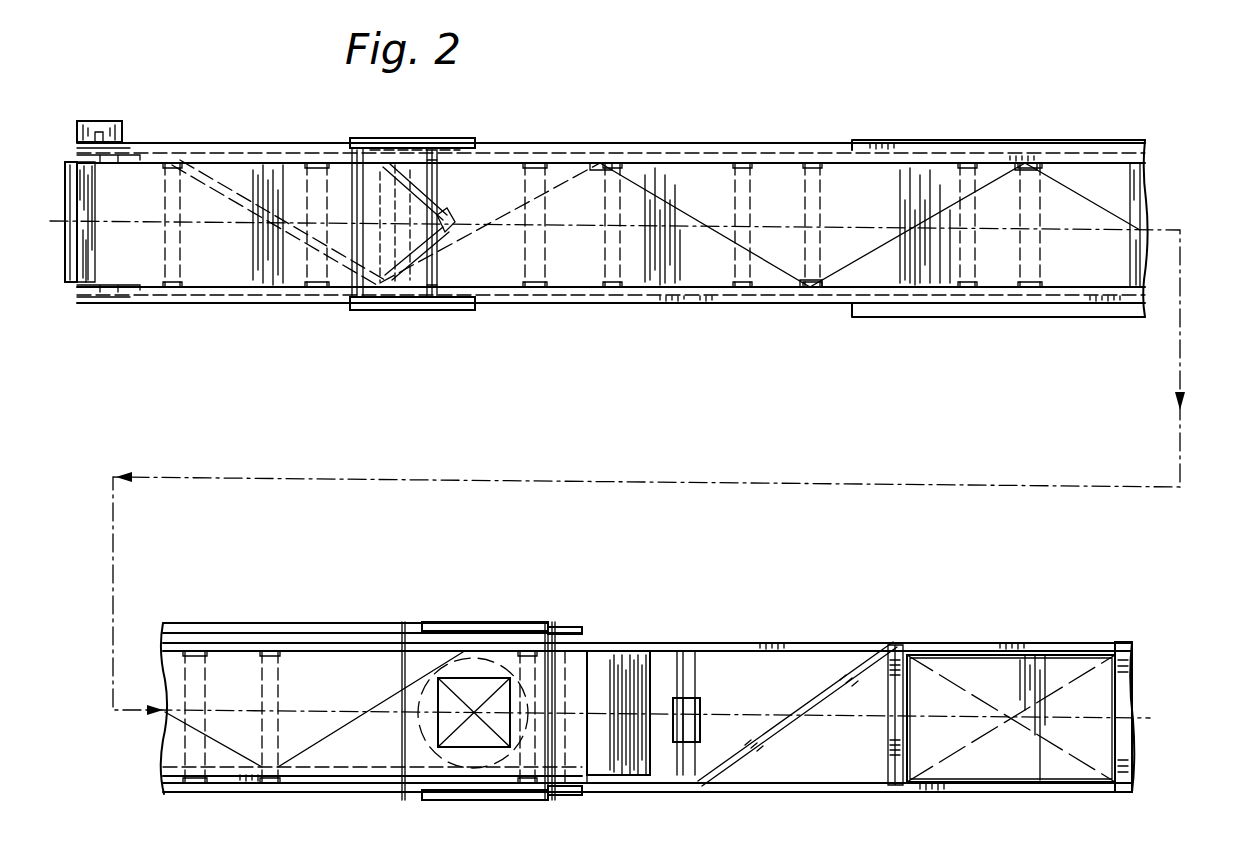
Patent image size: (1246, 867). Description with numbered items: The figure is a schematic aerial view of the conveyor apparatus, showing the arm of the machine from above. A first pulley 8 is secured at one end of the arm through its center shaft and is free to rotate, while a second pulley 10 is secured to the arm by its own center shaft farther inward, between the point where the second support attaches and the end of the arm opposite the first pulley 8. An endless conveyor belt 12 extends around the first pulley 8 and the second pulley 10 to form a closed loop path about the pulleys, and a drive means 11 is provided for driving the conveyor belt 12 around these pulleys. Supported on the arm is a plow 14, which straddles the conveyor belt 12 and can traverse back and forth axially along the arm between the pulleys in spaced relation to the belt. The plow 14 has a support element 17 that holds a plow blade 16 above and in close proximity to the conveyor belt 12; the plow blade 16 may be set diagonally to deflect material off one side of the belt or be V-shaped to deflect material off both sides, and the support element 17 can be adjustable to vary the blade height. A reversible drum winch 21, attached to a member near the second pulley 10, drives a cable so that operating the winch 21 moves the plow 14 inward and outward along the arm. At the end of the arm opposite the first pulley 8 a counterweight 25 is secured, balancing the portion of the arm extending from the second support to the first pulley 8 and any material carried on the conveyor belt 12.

The first pulley 8 is at (67, 287).
The second pulley 10 is at (620, 668).
The means for driving conveyor belt 11 is at (122, 121).
The endless conveyor belt 12 is at (683, 190).
The plow 14 is at (386, 138).
The plow blade 16 is at (445, 212).
The support element 17 is at (432, 146).
The reversible drum winch 21 is at (700, 723).
The counterweight 25 is at (1072, 668).